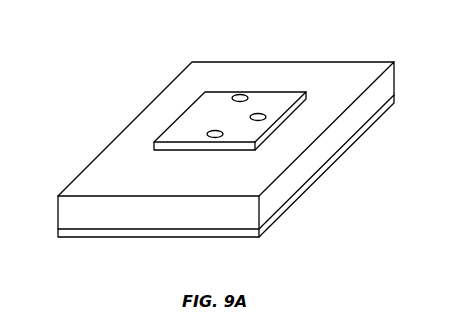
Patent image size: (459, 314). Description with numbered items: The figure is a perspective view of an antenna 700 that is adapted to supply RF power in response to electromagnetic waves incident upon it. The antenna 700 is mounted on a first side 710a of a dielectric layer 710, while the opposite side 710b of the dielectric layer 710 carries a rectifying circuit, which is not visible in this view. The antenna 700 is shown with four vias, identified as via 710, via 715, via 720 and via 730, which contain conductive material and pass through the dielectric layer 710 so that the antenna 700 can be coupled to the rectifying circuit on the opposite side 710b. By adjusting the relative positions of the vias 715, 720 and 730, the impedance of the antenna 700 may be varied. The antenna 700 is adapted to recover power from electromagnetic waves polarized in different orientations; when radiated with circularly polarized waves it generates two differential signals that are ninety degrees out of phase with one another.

The antenna 700 is at (200, 107).
The dielectric layer 710 is at (213, 166).
The first side 710a is at (102, 175).
The opposite side 710b is at (168, 237).
The via 715 is at (236, 92).
The via 720 is at (261, 113).
The via 730 is at (211, 137).